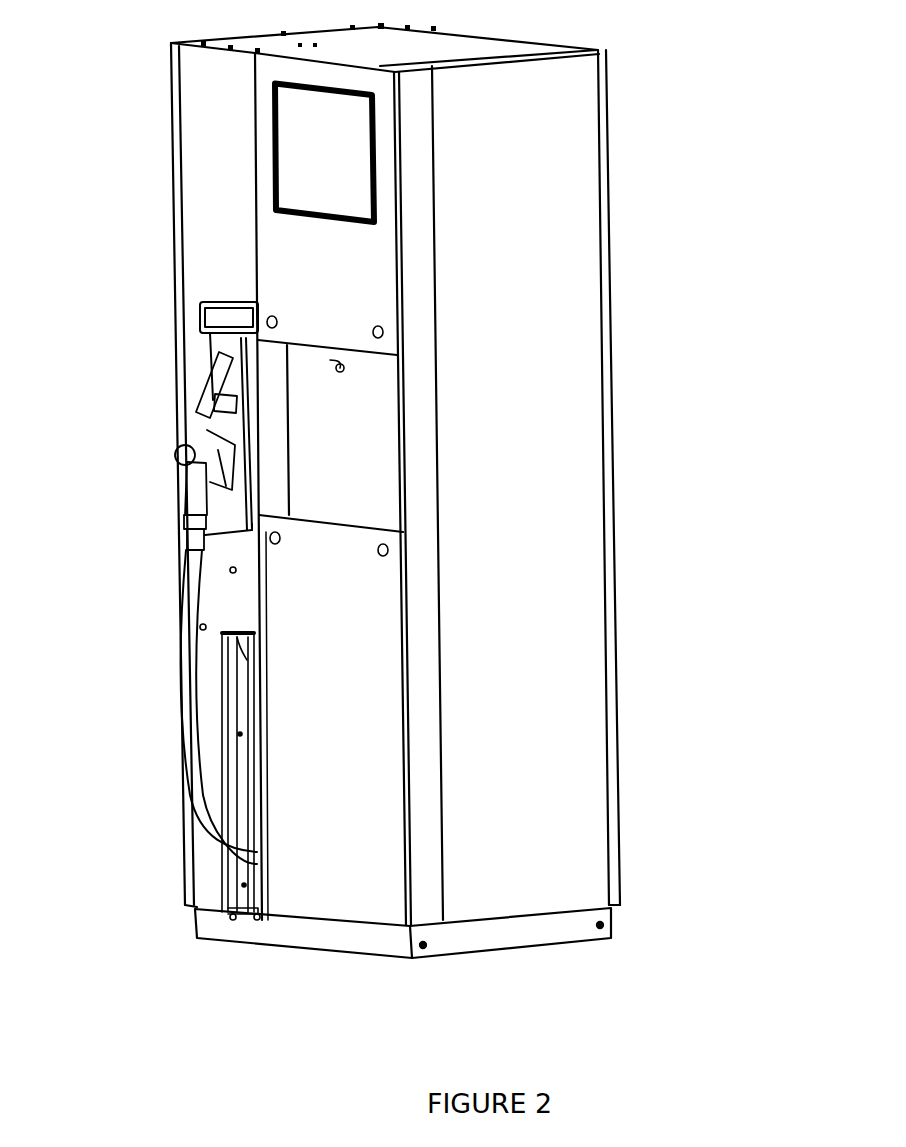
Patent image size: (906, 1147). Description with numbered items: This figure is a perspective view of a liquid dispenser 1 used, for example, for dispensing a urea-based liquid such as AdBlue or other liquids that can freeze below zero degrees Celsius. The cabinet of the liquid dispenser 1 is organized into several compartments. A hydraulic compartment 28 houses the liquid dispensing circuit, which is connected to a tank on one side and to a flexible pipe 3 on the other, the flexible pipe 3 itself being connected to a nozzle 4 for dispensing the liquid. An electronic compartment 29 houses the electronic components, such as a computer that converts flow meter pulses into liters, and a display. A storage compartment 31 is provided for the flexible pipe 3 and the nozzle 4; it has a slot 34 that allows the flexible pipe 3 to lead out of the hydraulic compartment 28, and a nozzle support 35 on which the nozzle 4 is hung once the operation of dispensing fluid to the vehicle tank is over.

The liquid dispenser 1 is at (607, 66).
The flexible pipe 3 is at (184, 650).
The nozzle 4 is at (184, 500).
The hydraulic compartment 28 is at (345, 907).
The electronic compartment 29 is at (418, 266).
The storage compartment 31 is at (190, 222).
The slot 34 is at (243, 713).
The nozzle support 35 is at (207, 336).